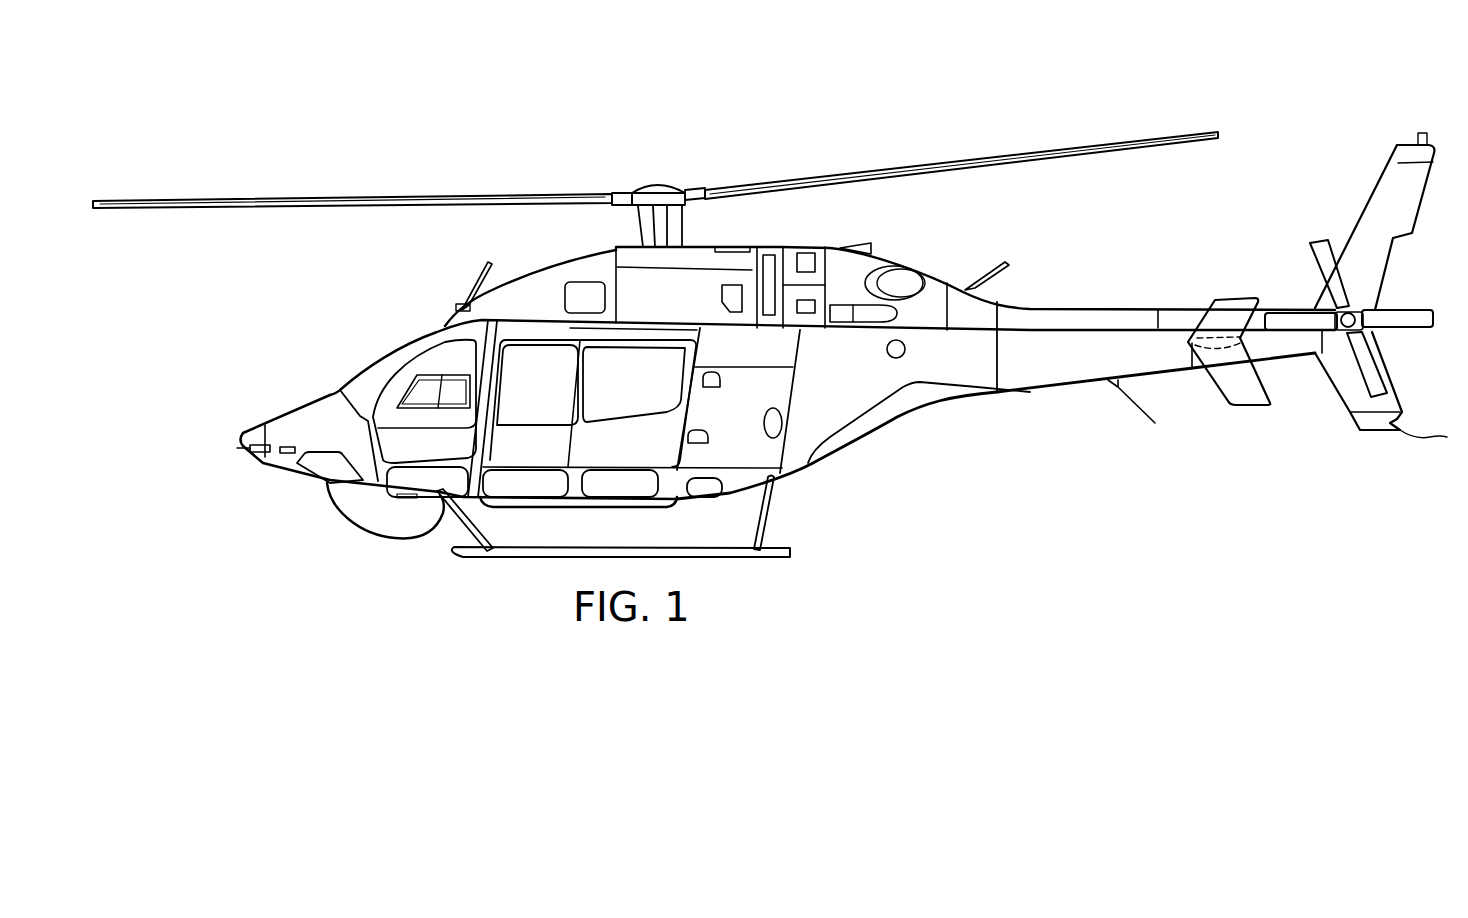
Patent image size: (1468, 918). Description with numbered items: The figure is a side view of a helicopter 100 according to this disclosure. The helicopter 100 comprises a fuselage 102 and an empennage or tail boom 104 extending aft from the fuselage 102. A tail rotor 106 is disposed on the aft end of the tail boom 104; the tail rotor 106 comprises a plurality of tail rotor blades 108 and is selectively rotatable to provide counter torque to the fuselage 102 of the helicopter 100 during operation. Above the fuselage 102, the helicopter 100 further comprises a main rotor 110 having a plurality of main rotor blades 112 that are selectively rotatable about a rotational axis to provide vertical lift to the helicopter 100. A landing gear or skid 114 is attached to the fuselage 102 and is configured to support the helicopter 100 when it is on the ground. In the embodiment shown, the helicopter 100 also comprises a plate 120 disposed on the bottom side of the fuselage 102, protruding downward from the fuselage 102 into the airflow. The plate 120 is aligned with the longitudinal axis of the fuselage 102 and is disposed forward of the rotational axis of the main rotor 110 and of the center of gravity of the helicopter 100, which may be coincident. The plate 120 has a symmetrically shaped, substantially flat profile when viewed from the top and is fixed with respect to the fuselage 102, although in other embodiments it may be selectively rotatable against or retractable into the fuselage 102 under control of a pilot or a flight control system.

The helicopter 100 is at (128, 104).
The fuselage 102 is at (282, 414).
The tail boom 104 is at (1086, 307).
The tail rotor 106 is at (1387, 344).
The tail rotor blades 108 is at (1405, 306).
The main rotor 110 is at (638, 177).
The main rotor blades 112 is at (350, 197).
The skid 114 is at (777, 517).
The plate 120 is at (383, 537).